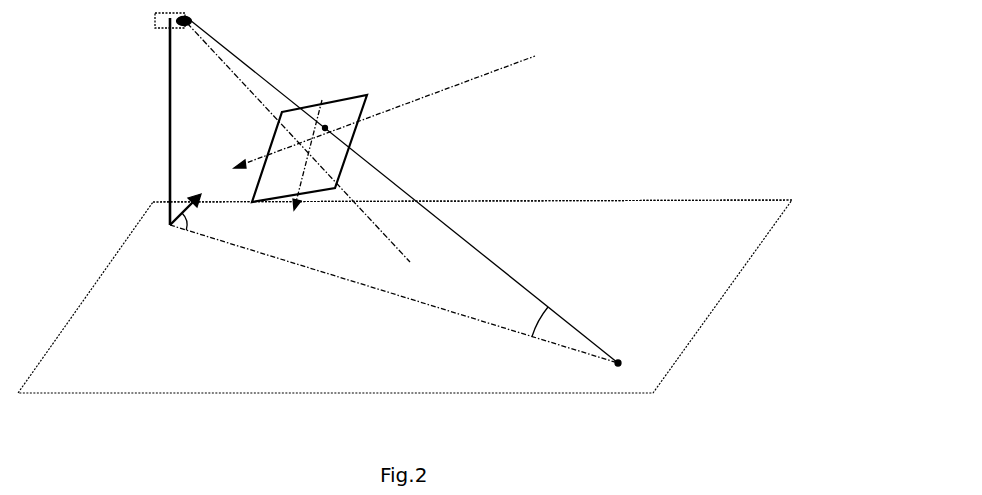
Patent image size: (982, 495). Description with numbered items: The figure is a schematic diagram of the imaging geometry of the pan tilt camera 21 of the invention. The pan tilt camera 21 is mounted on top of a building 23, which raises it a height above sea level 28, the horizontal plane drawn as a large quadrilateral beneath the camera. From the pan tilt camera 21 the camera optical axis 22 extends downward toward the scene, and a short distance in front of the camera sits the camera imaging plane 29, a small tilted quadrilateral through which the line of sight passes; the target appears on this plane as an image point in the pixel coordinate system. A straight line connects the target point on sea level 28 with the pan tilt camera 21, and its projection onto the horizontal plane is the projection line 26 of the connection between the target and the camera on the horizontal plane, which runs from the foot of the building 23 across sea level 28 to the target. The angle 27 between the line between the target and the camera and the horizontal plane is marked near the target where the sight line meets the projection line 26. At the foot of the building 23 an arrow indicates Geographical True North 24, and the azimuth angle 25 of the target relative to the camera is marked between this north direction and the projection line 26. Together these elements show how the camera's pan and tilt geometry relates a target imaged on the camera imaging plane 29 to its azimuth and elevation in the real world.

The pan tilt camera 21 is at (157, 22).
The camera optical axis 22 is at (225, 58).
The building 23 is at (170, 115).
The Geographical True North 24 is at (157, 203).
The azimuth angle of the target relative to the camera 25 is at (182, 217).
The projection line of the connection between the target and the camera on the horiz 26 is at (408, 300).
The angle between the line between the target and the camera and the horizontal plan 27 is at (530, 330).
The sea level 28 is at (675, 210).
The camera imaging plane 29 is at (388, 140).